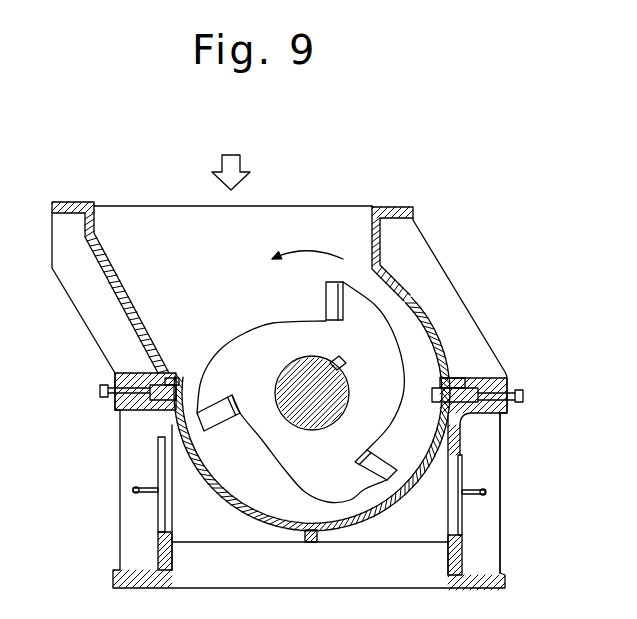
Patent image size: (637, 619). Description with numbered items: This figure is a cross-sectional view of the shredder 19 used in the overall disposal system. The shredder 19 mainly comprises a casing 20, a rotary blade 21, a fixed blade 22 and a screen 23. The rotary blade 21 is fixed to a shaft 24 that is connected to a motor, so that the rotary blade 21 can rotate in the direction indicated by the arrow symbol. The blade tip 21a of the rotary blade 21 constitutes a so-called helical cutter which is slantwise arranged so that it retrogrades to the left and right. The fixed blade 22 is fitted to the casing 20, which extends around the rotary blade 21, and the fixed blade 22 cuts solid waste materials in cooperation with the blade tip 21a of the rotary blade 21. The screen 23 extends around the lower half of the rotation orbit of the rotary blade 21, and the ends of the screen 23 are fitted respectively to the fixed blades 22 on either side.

The shredder 19 is at (440, 236).
The casing 20 is at (428, 305).
The rotary blade 21 is at (236, 358).
The blade tip 21a is at (336, 305).
The fixed blade 22 is at (472, 378).
The screen 23 is at (216, 488).
The shaft 24 is at (310, 416).